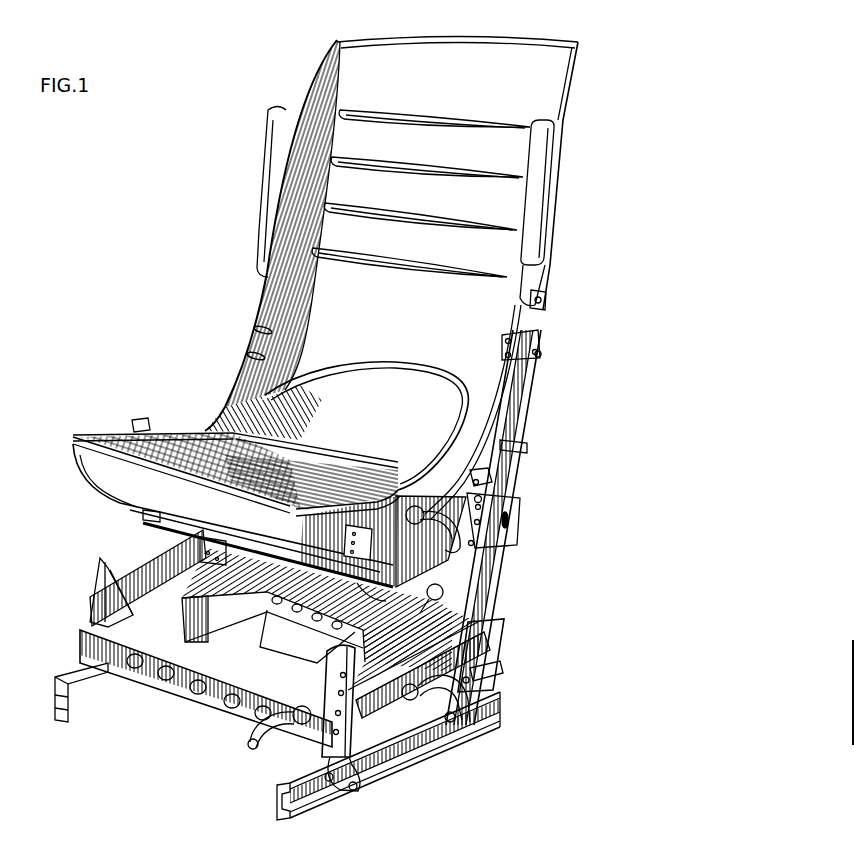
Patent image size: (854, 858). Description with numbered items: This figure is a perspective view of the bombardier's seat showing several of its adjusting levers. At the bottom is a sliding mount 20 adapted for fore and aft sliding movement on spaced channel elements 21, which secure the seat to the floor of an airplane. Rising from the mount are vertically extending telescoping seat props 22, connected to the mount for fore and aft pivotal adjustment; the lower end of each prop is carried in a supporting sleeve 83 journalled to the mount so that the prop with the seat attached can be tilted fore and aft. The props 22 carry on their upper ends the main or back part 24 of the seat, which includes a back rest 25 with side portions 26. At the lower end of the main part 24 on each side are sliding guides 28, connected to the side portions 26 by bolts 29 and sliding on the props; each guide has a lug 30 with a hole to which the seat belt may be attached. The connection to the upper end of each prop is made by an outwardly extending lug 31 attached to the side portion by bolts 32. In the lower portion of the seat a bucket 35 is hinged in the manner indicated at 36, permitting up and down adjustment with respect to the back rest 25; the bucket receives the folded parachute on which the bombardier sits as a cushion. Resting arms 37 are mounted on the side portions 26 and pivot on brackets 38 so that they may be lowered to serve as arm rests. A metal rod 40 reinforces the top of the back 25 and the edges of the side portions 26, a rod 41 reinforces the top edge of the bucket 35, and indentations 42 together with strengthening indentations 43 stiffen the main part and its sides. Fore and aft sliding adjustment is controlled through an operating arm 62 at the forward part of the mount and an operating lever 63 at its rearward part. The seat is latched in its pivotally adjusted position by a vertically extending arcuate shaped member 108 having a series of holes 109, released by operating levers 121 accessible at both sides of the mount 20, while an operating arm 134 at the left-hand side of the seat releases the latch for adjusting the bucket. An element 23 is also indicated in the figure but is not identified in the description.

The sliding mount 20 is at (193, 663).
The channel elements 21 is at (73, 710).
The telescoping seat props 22 is at (500, 572).
The seat support 23 is at (193, 548).
The main part of the seat 24 is at (489, 60).
The back rest 25 is at (342, 192).
The side portions 26 is at (313, 80).
The sliding guides 28 is at (507, 510).
The bolts 29 is at (483, 499).
The lug 30 is at (492, 477).
The outwardly extending lug 31 is at (530, 348).
The bolts 32 is at (541, 356).
The bucket 35 is at (100, 463).
The hinging 36 is at (290, 443).
The resting arms 37 is at (548, 213).
The brackets 38 is at (540, 304).
The metal rod 40 is at (140, 426).
The rod 41 is at (76, 436).
The indentations 42 is at (333, 259).
The strengthening indentations 43 is at (240, 342).
The operating arm 62 is at (249, 739).
The operating lever 63 is at (437, 600).
The supporting sleeve 83 is at (492, 658).
The arcuate shaped member 108 is at (96, 590).
The holes 109 is at (352, 758).
The operating levers 121 is at (442, 712).
The operating arm 134 is at (438, 560).